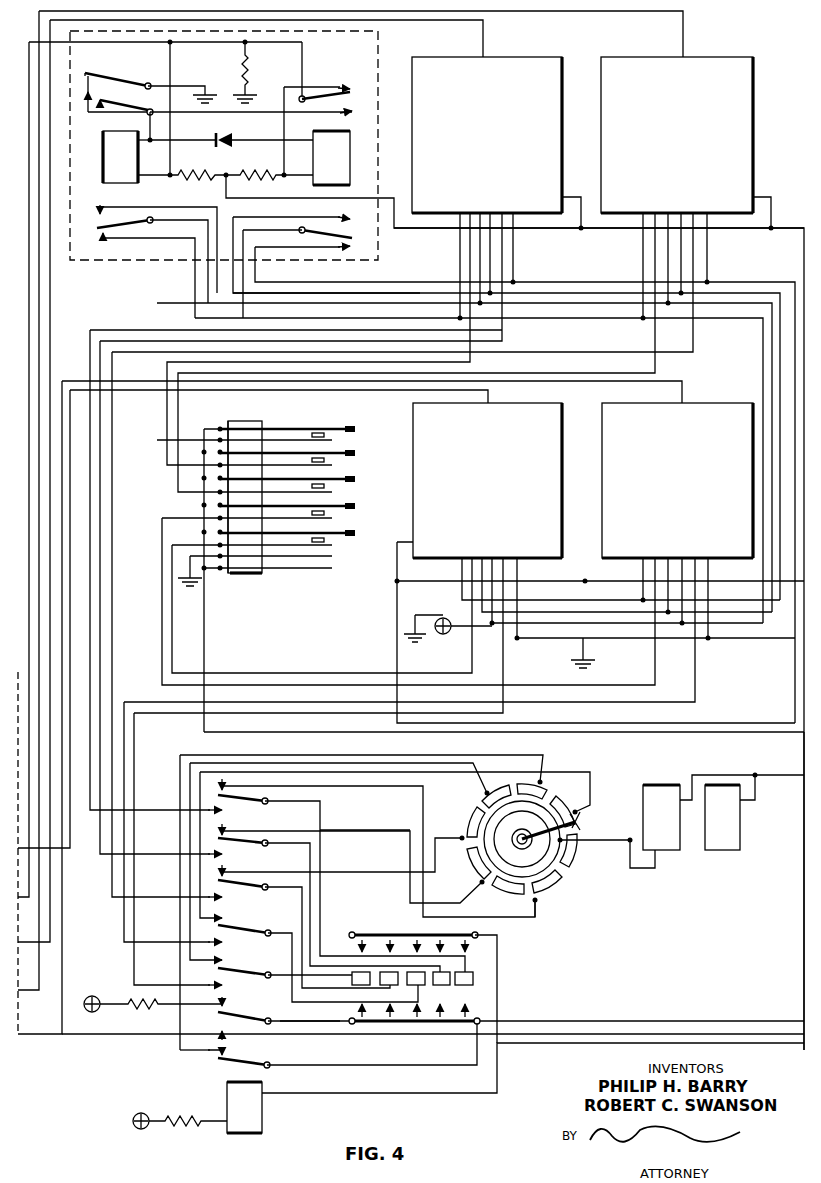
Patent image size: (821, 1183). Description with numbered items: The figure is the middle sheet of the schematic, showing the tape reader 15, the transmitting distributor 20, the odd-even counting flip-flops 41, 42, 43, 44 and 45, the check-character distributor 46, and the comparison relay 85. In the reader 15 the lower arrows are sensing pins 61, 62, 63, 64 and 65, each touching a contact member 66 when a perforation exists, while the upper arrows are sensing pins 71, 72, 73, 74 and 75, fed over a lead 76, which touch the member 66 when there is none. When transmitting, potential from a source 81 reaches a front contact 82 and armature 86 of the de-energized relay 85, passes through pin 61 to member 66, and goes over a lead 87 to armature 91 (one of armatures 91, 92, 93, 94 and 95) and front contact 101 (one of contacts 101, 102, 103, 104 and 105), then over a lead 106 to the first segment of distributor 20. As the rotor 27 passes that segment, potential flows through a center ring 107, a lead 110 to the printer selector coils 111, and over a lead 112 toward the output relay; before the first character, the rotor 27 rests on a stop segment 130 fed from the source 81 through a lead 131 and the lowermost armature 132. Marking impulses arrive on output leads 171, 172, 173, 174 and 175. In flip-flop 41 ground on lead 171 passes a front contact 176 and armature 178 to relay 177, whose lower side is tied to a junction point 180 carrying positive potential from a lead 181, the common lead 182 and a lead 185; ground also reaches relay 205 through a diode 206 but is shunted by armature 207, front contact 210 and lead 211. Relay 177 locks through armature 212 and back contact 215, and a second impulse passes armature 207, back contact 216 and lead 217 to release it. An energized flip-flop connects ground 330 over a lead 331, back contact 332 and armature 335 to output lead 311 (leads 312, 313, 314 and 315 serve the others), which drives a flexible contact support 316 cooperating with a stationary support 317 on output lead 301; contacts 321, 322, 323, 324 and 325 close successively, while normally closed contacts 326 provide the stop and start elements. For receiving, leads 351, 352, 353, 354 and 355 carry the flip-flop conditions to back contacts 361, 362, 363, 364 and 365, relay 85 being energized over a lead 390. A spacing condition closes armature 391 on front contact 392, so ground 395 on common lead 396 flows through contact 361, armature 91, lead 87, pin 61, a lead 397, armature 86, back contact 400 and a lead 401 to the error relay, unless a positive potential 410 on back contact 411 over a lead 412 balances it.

The tape reader 15 is at (508, 968).
The distributor 20 is at (580, 872).
The rotor 27 is at (536, 834).
The flip-flop 41 is at (380, 52).
The flip-flop 42 is at (520, 57).
The flip-flop 43 is at (722, 57).
The flip-flop 44 is at (716, 403).
The flip-flop 45 is at (540, 403).
The distributor 46 is at (240, 582).
The sensing pin 61 is at (465, 1022).
The sensing pin 62 is at (440, 1022).
The sensing pin 63 is at (417, 1022).
The sensing pin 64 is at (390, 1022).
The sensing pin 65 is at (356, 1022).
The contact member 66 is at (460, 986).
The sensing pin 71 is at (476, 936).
The sensing pin 72 is at (440, 938).
The sensing pin 73 is at (416, 936).
The sensing pin 74 is at (388, 936).
The sensing pin 75 is at (360, 936).
The lead 76 is at (756, 1022).
The source of potential 81 is at (92, 1012).
The front contact 82 is at (222, 1003).
The relay 85 is at (258, 1113).
The armature 86 is at (272, 1016).
The lead 87 is at (320, 808).
The armature 91 is at (264, 802).
The armature 92 is at (264, 844).
The armature 93 is at (264, 888).
The armature 94 is at (266, 928).
The armature 95 is at (266, 972).
The front contact 101 is at (222, 786).
The front contact 102 is at (222, 831).
The front contact 103 is at (222, 872).
The front contact 104 is at (222, 920).
The front contact 105 is at (222, 962).
The lead 106 is at (414, 782).
The center ring 107 is at (540, 898).
The lead 110 is at (598, 840).
The selector coils 111 is at (690, 776).
The lead 112 is at (772, 775).
The stop segment 130 is at (580, 822).
The lead 131 is at (382, 1066).
The lowermost armature 132 is at (252, 1058).
The output lead 171 is at (50, 275).
The output lead 172 is at (39, 295).
The output lead 173 is at (29, 313).
The output lead 174 is at (82, 381).
The output lead 175 is at (122, 390).
The front contact 176 is at (138, 106).
The relay 177 is at (103, 148).
The armature 178 is at (104, 118).
The junction point 180 is at (219, 168).
The lead 181 is at (226, 182).
The lead 182 is at (606, 238).
The lead 185 is at (397, 623).
The relay 205 is at (350, 151).
The diode 206 is at (224, 134).
The armature 207 is at (310, 92).
The front contact 210 is at (338, 88).
The lead 211 is at (282, 156).
The armature 212 is at (110, 78).
The back contact 215 is at (87, 72).
The back contact 216 is at (356, 110).
The lead 217 is at (240, 120).
The output lead 301 is at (204, 643).
The output lead 311 is at (196, 274).
The output lead 312 is at (470, 246).
The output lead 313 is at (655, 266).
The output lead 314 is at (655, 676).
The output lead 315 is at (316, 673).
The flexible contact support 316 is at (294, 440).
The stationary contact support 317 is at (306, 430).
The contacts 321 is at (332, 440).
The contacts 322 is at (332, 465).
The contacts 323 is at (332, 492).
The contacts 324 is at (332, 518).
The contacts 325 is at (332, 545).
The contacts 326 is at (258, 574).
The ground potential 330 is at (404, 638).
The lead 331 is at (443, 616).
The back contact 332 is at (100, 204).
The armature 335 is at (130, 226).
The lead 351 is at (246, 322).
The lead 352 is at (502, 333).
The lead 353 is at (693, 334).
The lead 354 is at (695, 666).
The lead 355 is at (503, 666).
The back contact 361 is at (208, 809).
The back contact 362 is at (208, 853).
The back contact 363 is at (208, 896).
The back contact 364 is at (208, 941).
The back contact 365 is at (208, 984).
The lead 390 is at (590, 1044).
The armature 391 is at (348, 238).
The front contact 392 is at (344, 254).
The ground potential 395 is at (592, 662).
The common lead 396 is at (790, 650).
The lead 397 is at (290, 1020).
The back contact 400 is at (220, 1032).
The lead 401 is at (672, 1034).
The positive potential 410 is at (446, 634).
The back contact 411 is at (342, 214).
The lead 412 is at (418, 290).